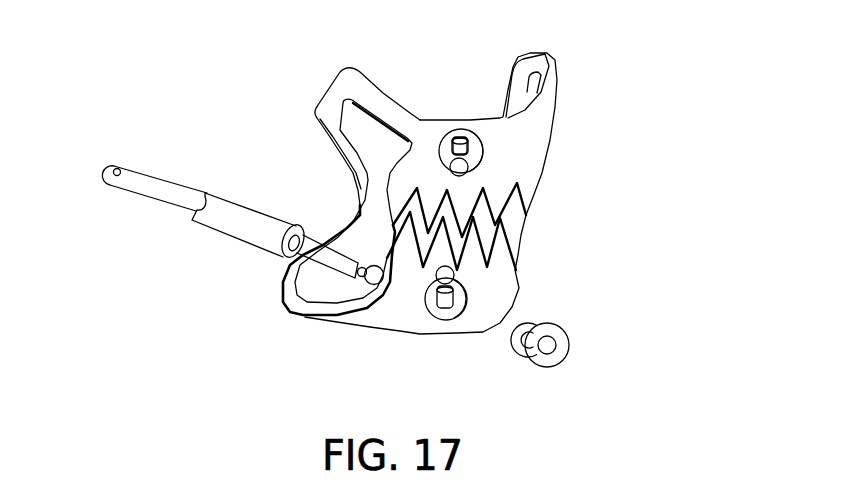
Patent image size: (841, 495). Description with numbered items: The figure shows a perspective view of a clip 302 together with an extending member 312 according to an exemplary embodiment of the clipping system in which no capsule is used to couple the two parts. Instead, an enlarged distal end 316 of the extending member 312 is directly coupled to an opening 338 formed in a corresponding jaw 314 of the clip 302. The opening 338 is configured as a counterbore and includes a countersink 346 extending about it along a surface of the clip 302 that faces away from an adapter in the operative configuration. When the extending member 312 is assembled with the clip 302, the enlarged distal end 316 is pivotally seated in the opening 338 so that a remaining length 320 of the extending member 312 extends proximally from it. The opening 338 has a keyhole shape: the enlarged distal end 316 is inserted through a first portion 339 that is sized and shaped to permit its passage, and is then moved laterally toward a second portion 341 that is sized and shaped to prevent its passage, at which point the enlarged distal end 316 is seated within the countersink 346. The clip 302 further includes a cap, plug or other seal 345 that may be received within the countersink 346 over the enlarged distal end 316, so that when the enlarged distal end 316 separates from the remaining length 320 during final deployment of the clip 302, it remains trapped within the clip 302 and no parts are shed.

The clip 302 is at (548, 156).
The extending member 312 is at (163, 192).
The jaw 314 is at (426, 133).
The enlarged distal end 316 is at (368, 281).
The remaining length 320 is at (163, 204).
The opening 338 is at (462, 150).
The first portion 339 is at (457, 176).
The second portion 341 is at (457, 155).
The seal 345 is at (553, 322).
The countersink 346 is at (483, 150).